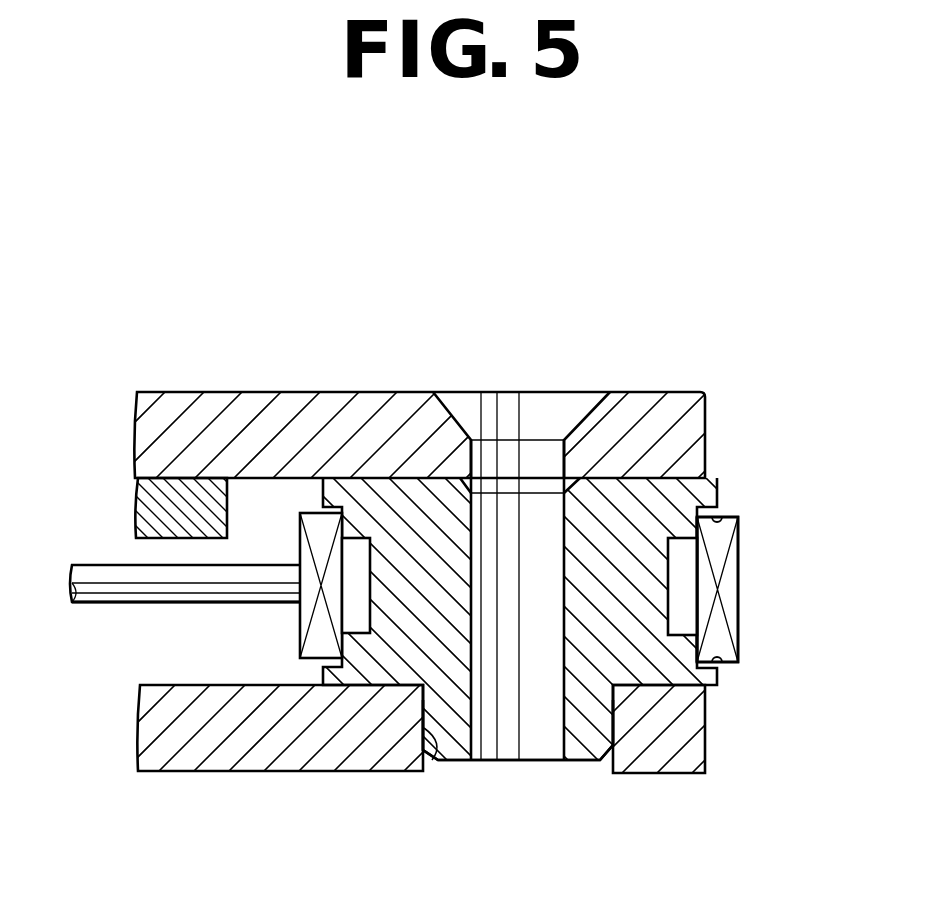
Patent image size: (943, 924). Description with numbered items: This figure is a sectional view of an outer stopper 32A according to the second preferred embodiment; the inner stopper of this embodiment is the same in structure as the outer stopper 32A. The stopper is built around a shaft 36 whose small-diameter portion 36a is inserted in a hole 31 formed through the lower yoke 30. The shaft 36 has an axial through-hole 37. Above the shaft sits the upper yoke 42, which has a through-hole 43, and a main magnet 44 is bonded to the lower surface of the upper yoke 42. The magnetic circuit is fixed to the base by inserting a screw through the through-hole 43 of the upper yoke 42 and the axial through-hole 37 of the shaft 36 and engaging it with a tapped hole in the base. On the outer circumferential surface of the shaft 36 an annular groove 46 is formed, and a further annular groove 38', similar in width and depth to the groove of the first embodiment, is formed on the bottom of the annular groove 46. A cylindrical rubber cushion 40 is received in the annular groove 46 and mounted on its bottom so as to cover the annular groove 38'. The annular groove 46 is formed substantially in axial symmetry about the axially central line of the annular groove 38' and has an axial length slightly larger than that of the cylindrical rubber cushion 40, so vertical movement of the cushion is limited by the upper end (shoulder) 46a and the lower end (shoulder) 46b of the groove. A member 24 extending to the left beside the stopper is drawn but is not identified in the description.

The shaft 24 is at (187, 594).
The lower yoke 30 is at (643, 762).
The hole 31 is at (433, 762).
The outer stopper 32A is at (740, 554).
The shaft 36 is at (677, 673).
The small-diameter portion 36a is at (580, 752).
The axial through-hole 37 is at (478, 732).
The annular groove 38' is at (739, 586).
The cylindrical rubber cushion 40 is at (723, 537).
The upper yoke 42 is at (640, 400).
The through-hole 43 is at (565, 446).
The main magnet 44 is at (150, 505).
The annular groove 46 is at (697, 645).
The upper end (shoulder) 46a is at (718, 517).
The lower end (shoulder) 46b is at (717, 663).